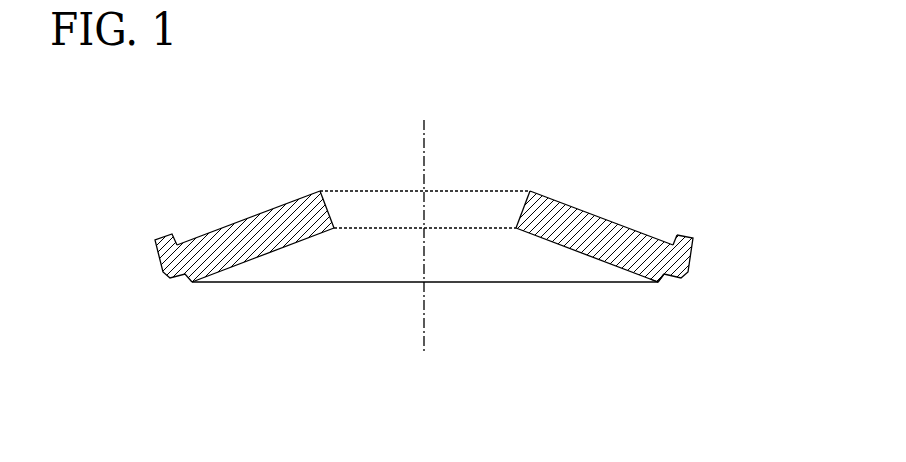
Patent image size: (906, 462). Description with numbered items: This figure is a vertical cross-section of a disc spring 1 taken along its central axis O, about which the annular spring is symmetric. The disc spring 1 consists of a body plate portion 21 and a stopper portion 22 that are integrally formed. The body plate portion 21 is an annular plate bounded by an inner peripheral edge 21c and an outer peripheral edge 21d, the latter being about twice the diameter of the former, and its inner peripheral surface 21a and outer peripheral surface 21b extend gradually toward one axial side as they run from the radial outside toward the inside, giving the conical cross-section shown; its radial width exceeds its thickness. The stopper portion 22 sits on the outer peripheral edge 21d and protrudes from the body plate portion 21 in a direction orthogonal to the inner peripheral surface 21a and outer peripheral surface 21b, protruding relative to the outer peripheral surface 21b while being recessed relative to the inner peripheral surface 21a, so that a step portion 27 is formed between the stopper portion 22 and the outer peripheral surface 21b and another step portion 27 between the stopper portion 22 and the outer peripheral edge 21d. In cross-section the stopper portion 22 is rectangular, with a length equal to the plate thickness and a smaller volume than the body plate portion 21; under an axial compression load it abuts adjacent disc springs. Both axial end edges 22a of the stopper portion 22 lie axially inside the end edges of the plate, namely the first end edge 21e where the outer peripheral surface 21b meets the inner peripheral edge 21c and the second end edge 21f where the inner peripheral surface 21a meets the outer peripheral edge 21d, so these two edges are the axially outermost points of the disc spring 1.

The disc spring 1 is at (700, 130).
The central axis O is at (425, 133).
The body plate portion 21 is at (598, 212).
The inner peripheral surface 21a is at (266, 254).
The outer peripheral surface 21b is at (246, 216).
The inner peripheral edge 21c is at (342, 192).
The outer peripheral edge 21d is at (662, 282).
The first end edge 21e is at (531, 191).
The second end edge 21f is at (653, 283).
The stopper portion 22 is at (698, 240).
The axial end edges 22a is at (673, 239).
The step portion 27 is at (176, 242).